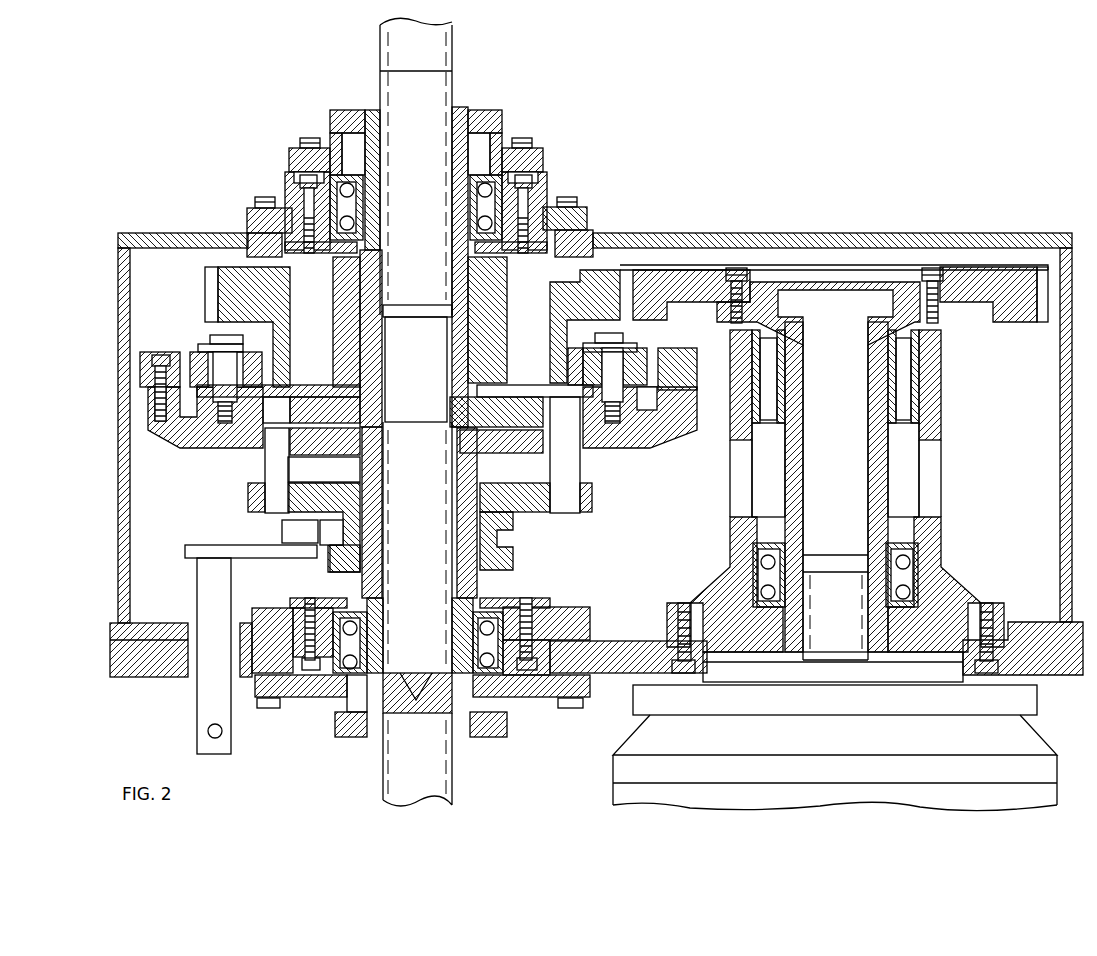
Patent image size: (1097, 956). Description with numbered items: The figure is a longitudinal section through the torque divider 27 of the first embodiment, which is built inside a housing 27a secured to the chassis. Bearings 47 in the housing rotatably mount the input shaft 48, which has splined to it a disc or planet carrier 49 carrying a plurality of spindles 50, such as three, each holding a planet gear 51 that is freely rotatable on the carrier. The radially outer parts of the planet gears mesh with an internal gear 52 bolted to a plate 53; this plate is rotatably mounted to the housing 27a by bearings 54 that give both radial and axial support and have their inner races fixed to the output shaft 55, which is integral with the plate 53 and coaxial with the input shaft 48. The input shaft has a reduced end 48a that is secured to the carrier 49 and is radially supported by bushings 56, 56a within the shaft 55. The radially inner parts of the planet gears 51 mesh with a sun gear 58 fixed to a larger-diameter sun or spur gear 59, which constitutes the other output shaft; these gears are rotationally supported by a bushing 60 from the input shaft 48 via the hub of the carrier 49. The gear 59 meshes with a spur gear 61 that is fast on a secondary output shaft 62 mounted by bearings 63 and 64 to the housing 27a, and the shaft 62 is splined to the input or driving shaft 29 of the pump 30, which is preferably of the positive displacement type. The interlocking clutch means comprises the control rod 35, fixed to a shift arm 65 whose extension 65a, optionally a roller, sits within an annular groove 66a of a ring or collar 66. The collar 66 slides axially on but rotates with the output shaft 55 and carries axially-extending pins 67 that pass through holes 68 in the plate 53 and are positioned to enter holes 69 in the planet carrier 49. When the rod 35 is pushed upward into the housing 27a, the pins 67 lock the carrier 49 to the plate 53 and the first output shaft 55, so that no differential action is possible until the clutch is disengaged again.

The torque divider 27 is at (219, 170).
The housing 27a is at (636, 234).
The input shaft of pump 29 is at (847, 635).
The pump 30 is at (1055, 774).
The control rod 35 is at (198, 700).
The bearings 47 is at (484, 178).
The input shaft 48 is at (452, 54).
The reduced end 48a is at (429, 552).
The planet carrier 49 is at (447, 397).
The spindles 50 is at (220, 338).
The planet gear 51 is at (198, 354).
The internal gear 52 is at (142, 358).
The plate 53 is at (185, 448).
The bearings 54 is at (486, 605).
The output shaft 55 is at (385, 770).
The bushing 56 is at (384, 470).
The bushing 56a is at (385, 626).
The sun gear 58 is at (572, 350).
The sun or spur gear 59 is at (218, 284).
The bushing 60 is at (384, 348).
The spur gear 61 is at (670, 282).
The secondary output shaft 62 is at (882, 479).
The bearing 63 is at (918, 392).
The bearing 64 is at (906, 565).
The shift arm 65 is at (240, 552).
The extension 65a is at (327, 547).
The ring or collar 66 is at (250, 497).
The annular groove 66a is at (326, 520).
The pins 67 is at (265, 466).
The holes 68 is at (298, 455).
The holes 69 is at (287, 400).